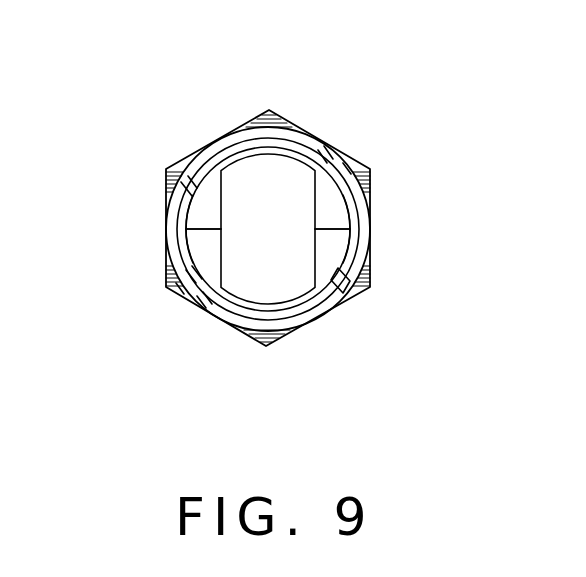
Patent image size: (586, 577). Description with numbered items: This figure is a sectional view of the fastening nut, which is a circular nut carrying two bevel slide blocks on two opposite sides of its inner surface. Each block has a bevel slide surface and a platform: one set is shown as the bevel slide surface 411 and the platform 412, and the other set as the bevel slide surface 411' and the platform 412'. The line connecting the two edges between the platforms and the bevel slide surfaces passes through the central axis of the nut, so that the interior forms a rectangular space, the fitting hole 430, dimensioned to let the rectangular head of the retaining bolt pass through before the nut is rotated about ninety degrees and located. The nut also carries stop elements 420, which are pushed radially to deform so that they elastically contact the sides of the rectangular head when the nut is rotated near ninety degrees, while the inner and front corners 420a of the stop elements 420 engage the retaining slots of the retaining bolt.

The bevel slide surface 411 is at (150, 166).
The bevel slide surface 411' is at (367, 311).
The platform 412 is at (138, 266).
The platform 412' is at (389, 177).
The stop element 420 is at (323, 158).
The inner and front corners 420a is at (352, 170).
The fitting hole 430 is at (267, 268).